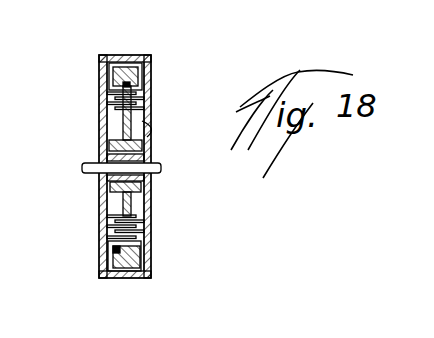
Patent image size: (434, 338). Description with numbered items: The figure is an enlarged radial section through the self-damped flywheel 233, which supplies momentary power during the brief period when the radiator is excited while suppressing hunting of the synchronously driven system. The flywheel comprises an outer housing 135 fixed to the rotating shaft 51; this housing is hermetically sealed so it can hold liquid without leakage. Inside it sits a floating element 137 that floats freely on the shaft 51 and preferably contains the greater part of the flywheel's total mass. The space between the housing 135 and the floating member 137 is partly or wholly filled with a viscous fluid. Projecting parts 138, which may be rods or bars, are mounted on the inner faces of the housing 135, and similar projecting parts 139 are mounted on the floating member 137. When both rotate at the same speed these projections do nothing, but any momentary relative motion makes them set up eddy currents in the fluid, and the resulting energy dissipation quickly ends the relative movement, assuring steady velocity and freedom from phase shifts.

The flywheel 233 is at (94, 128).
The outer housing 135 is at (152, 67).
The projecting parts 138 is at (147, 139).
The rotating shaft 51 is at (161, 168).
The projecting parts 139 is at (110, 262).
The floating element 137 is at (140, 262).